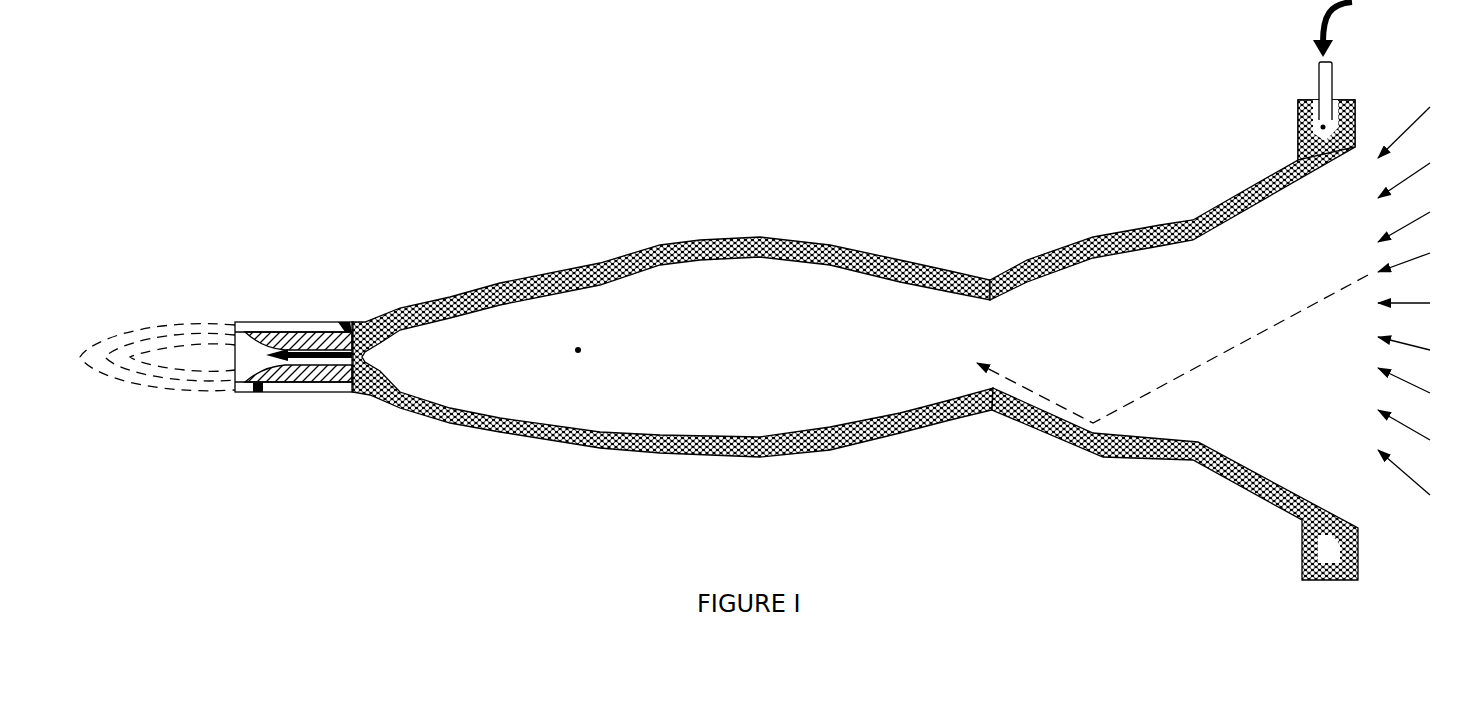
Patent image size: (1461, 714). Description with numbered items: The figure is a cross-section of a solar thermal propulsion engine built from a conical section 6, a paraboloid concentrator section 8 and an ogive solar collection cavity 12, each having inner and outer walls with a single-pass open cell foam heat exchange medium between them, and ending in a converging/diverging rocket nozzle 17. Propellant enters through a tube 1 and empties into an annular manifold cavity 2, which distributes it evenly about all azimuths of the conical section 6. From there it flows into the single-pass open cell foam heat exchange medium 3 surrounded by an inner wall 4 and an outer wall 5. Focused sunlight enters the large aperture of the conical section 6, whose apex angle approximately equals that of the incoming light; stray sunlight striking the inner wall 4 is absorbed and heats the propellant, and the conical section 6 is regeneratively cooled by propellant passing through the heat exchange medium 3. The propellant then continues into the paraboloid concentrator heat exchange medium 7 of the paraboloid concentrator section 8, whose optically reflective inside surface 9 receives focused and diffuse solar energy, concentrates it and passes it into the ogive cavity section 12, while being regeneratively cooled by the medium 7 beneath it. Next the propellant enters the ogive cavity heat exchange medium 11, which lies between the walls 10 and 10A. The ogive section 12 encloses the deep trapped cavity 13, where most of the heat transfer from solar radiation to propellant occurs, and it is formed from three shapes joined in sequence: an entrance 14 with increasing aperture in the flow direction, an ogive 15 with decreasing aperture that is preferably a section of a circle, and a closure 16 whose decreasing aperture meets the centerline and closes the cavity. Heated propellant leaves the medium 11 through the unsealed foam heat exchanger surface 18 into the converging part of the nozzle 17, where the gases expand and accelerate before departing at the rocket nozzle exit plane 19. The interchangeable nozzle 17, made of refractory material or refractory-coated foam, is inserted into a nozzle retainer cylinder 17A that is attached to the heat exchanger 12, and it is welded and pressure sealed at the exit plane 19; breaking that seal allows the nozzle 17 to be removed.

The tube 1 is at (1337, 89).
The annular manifold cavity 2 is at (1297, 112).
The single-pass open cell foam heat exchange medium 3 is at (1318, 168).
The inner wall 4 is at (1270, 205).
The outer wall 5 is at (1249, 187).
The conical section 6 is at (1365, 431).
The paraboloid concentrator heat exchange medium 7 is at (1123, 245).
The paraboloid concentrator section 8 is at (1000, 214).
The paraboloid concentrator inside surface 9 is at (1057, 276).
The wall 10 is at (757, 262).
The wall 10A is at (560, 258).
The ogive cavity heat exchange medium 11 is at (905, 284).
The ogive solar collection cavity 12 is at (990, 175).
The trapped cavity 13 is at (578, 350).
The entrance 14 is at (990, 223).
The ogive 15 is at (810, 223).
The closure 16 is at (342, 223).
The converging/diverging rocket nozzle 17 is at (292, 373).
The nozzle retainer cylinder 17A is at (258, 392).
The unsealed foam heat exchanger surface 18 is at (343, 324).
The rocket nozzle exit plane 19 is at (230, 373).